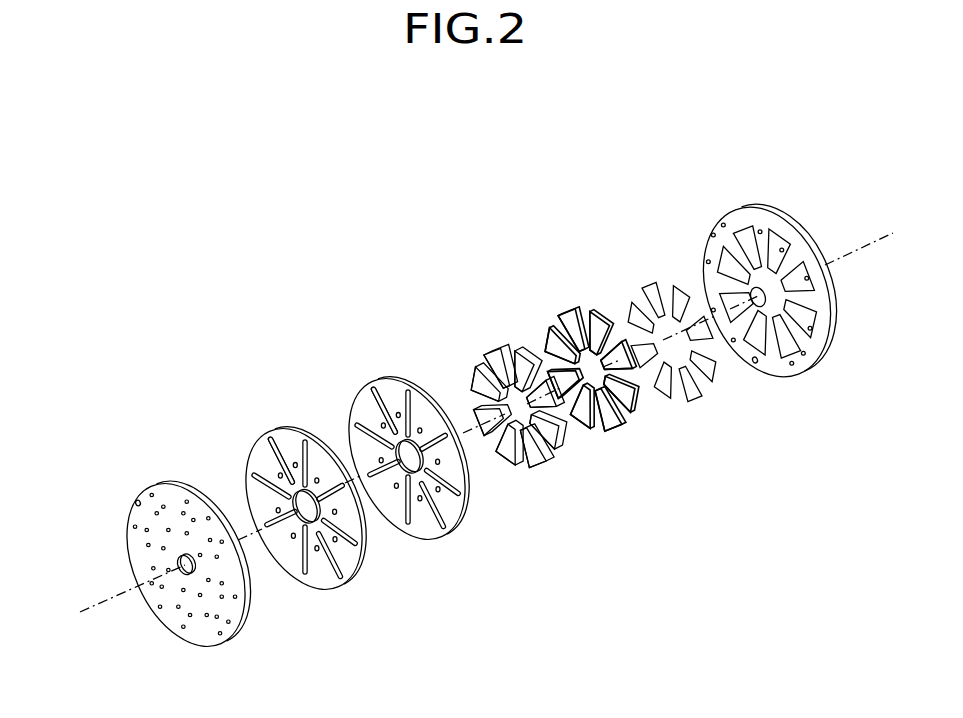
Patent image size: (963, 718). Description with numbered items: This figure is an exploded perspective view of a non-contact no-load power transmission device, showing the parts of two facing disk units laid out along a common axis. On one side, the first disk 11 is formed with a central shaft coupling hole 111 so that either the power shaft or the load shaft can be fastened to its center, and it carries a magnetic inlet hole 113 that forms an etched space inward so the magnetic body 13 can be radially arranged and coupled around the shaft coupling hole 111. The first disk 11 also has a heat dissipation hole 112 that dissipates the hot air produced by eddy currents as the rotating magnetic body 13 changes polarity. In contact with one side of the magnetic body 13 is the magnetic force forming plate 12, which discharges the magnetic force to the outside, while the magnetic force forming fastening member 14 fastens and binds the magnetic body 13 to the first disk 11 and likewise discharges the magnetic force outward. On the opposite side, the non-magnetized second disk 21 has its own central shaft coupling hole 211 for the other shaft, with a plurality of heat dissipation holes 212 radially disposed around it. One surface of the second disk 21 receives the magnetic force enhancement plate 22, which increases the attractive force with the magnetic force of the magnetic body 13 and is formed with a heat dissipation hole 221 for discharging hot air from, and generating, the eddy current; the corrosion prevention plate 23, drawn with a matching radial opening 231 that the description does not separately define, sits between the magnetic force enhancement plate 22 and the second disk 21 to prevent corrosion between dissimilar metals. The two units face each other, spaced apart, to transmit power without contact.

The first disk 11 is at (735, 222).
The shaft coupling hole 111 is at (790, 307).
The heat dissipation hole 112 is at (756, 363).
The magnetic inlet hole 113 is at (800, 370).
The magnetic force forming plate 12 is at (645, 268).
The magnetic body 13 is at (482, 348).
The magnetic force forming fastening member 14 is at (565, 307).
The second disk 21 is at (178, 490).
The shaft coupling hole 211 is at (181, 564).
The heat dissipation holes 212 is at (136, 503).
The magnetic force enhancement plate 22 is at (390, 390).
The heat dissipation hole 221 is at (362, 400).
The corrosion prevention plate 23 is at (287, 438).
The radial slot 231 is at (253, 440).